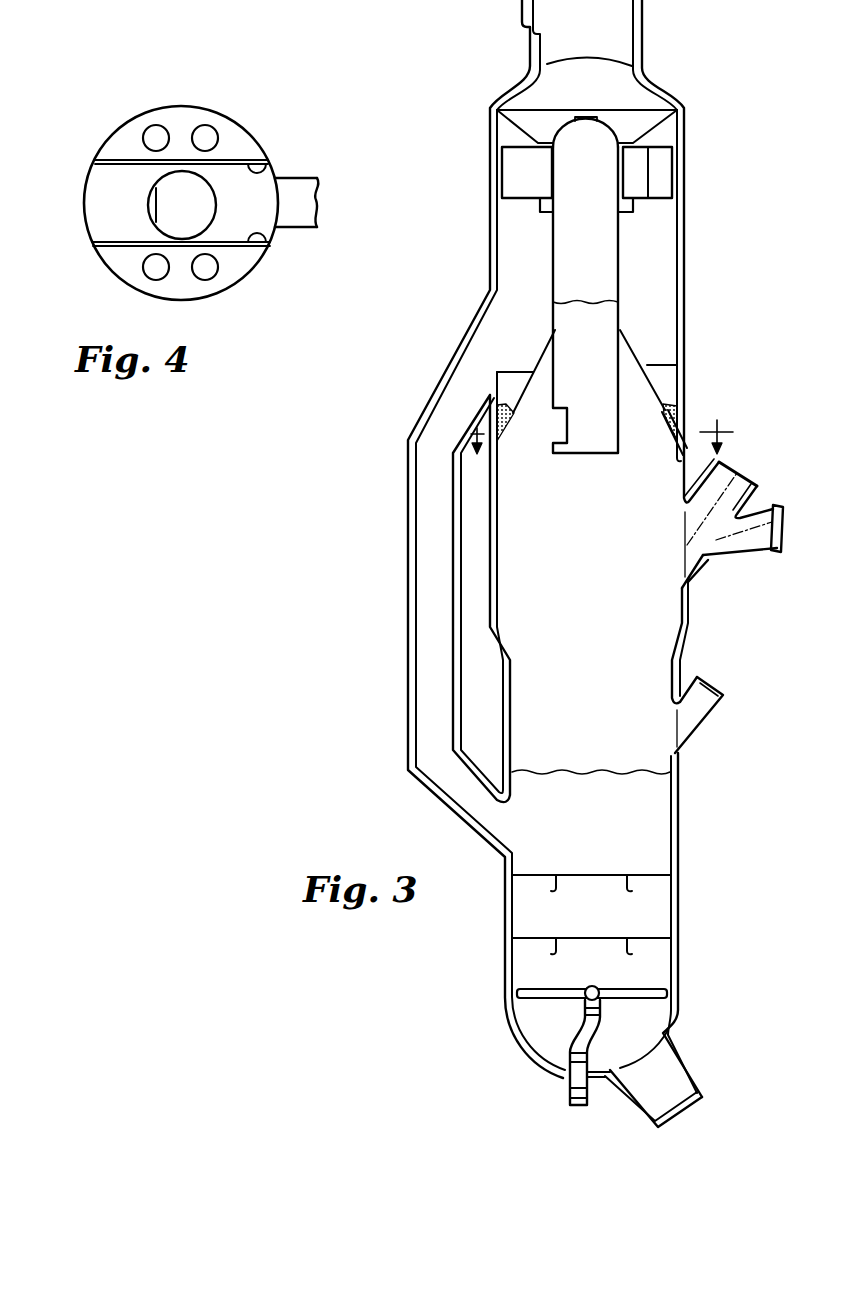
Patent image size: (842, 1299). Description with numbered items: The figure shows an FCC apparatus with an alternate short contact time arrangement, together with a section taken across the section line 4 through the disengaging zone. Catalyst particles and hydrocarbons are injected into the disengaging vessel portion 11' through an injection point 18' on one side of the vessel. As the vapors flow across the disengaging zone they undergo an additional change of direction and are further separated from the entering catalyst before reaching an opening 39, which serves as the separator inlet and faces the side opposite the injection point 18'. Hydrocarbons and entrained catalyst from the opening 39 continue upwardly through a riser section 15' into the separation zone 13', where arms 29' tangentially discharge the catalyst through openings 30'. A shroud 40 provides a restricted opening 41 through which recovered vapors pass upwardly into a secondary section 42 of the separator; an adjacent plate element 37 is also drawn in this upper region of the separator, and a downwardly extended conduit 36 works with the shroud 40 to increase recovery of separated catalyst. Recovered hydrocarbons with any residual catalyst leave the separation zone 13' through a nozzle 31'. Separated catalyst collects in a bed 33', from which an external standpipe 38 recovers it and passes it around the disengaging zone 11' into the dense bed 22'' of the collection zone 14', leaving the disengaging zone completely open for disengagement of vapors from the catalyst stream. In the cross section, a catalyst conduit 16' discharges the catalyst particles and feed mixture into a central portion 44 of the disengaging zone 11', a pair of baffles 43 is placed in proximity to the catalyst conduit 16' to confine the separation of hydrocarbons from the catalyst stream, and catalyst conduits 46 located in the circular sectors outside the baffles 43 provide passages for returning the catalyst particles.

In FIG. 4, the disengaging vessel portion 11' is at (58, 205).
In FIG. 3, the disengaging vessel portion 11' is at (481, 587).
In FIG. 3, the separation zone 13' is at (555, 563).
In FIG. 3, the collection zone 14' is at (624, 815).
In FIG. 3, the riser section 15' is at (588, 292).
In FIG. 4, the catalyst conduit 16' is at (317, 219).
In FIG. 3, the injection point 18' is at (732, 529).
In FIG. 3, the dense bed 22'' is at (591, 937).
In FIG. 3, the arms 29' is at (687, 194).
In FIG. 3, the openings 30' is at (621, 159).
In FIG. 3, the nozzle 31' is at (499, 28).
In FIG. 3, the bed 33' is at (703, 403).
In FIG. 3, the downwardly extended conduit 36 is at (630, 378).
In FIG. 3, the baffle plate 37 is at (662, 130).
In FIG. 3, the external standpipe 38 is at (405, 572).
In FIG. 3, the opening 39 is at (566, 432).
In FIG. 3, the shroud 40 is at (505, 128).
In FIG. 3, the restricted opening 41 is at (547, 210).
In FIG. 3, the secondary section 42 is at (637, 100).
In FIG. 4, the baffles 43 is at (272, 170).
In FIG. 4, the central portion 44 is at (115, 213).
In FIG. 4, the catalyst conduits 46 is at (205, 134).
In FIG. 3, the section line of Fig. 4 is at (600, 442).